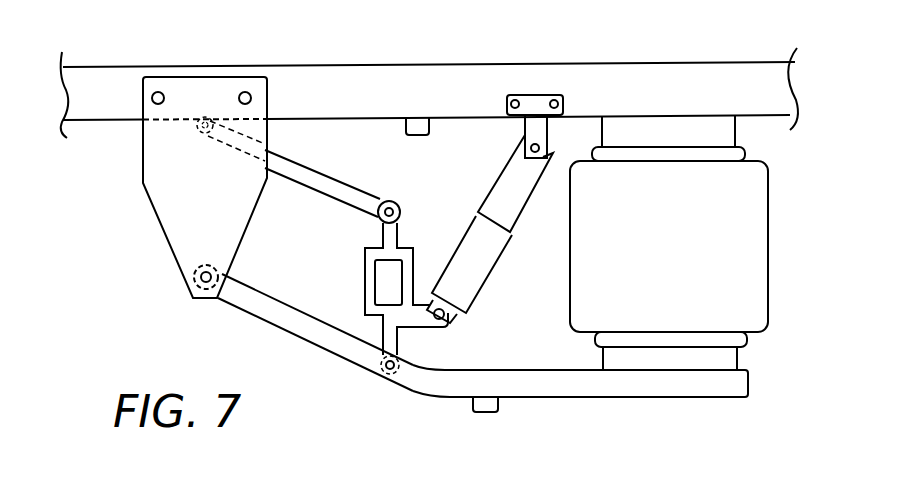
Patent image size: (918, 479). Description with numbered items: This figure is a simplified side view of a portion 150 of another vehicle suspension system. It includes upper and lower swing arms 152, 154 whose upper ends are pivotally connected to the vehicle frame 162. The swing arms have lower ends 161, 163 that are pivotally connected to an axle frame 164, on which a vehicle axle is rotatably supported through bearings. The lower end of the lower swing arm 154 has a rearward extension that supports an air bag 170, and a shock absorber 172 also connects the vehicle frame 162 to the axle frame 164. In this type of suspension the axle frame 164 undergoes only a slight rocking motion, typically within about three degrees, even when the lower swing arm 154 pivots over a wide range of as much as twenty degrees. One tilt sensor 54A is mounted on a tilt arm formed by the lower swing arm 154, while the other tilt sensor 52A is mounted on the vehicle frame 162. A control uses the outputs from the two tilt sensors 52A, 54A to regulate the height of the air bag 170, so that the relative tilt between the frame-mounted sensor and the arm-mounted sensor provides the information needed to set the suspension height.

The portion of vehicle suspension system 150 is at (413, 55).
The vehicle frame 162 is at (653, 72).
The upper swing arm 152 is at (323, 173).
The tilt sensor 52A is at (418, 135).
The lower end of upper swing arm 161 is at (390, 203).
The axle frame 164 is at (363, 280).
The shock absorber 172 is at (500, 243).
The lower swing arm 154 is at (308, 342).
The lower end of lower swing arm 163 is at (522, 370).
The tilt sensor 54A is at (490, 412).
The air bag 170 is at (737, 285).